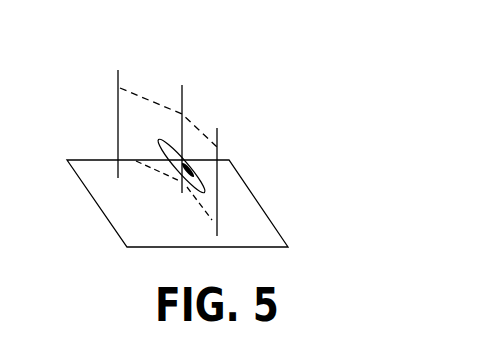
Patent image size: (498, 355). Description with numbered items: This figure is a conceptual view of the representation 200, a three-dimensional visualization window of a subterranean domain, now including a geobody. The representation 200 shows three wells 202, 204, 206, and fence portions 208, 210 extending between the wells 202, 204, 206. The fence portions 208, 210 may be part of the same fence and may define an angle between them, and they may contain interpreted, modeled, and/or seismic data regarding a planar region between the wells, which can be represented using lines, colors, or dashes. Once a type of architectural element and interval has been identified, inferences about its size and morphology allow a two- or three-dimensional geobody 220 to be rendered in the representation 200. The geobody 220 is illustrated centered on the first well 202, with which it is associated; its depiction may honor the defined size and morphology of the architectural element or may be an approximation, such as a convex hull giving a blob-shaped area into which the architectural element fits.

The representation 200 is at (258, 85).
The first well 202 is at (184, 89).
The well 204 is at (218, 130).
The well 206 is at (121, 73).
The fence portion 208 is at (160, 136).
The fence portion 210 is at (205, 168).
The geobody 220 is at (183, 186).